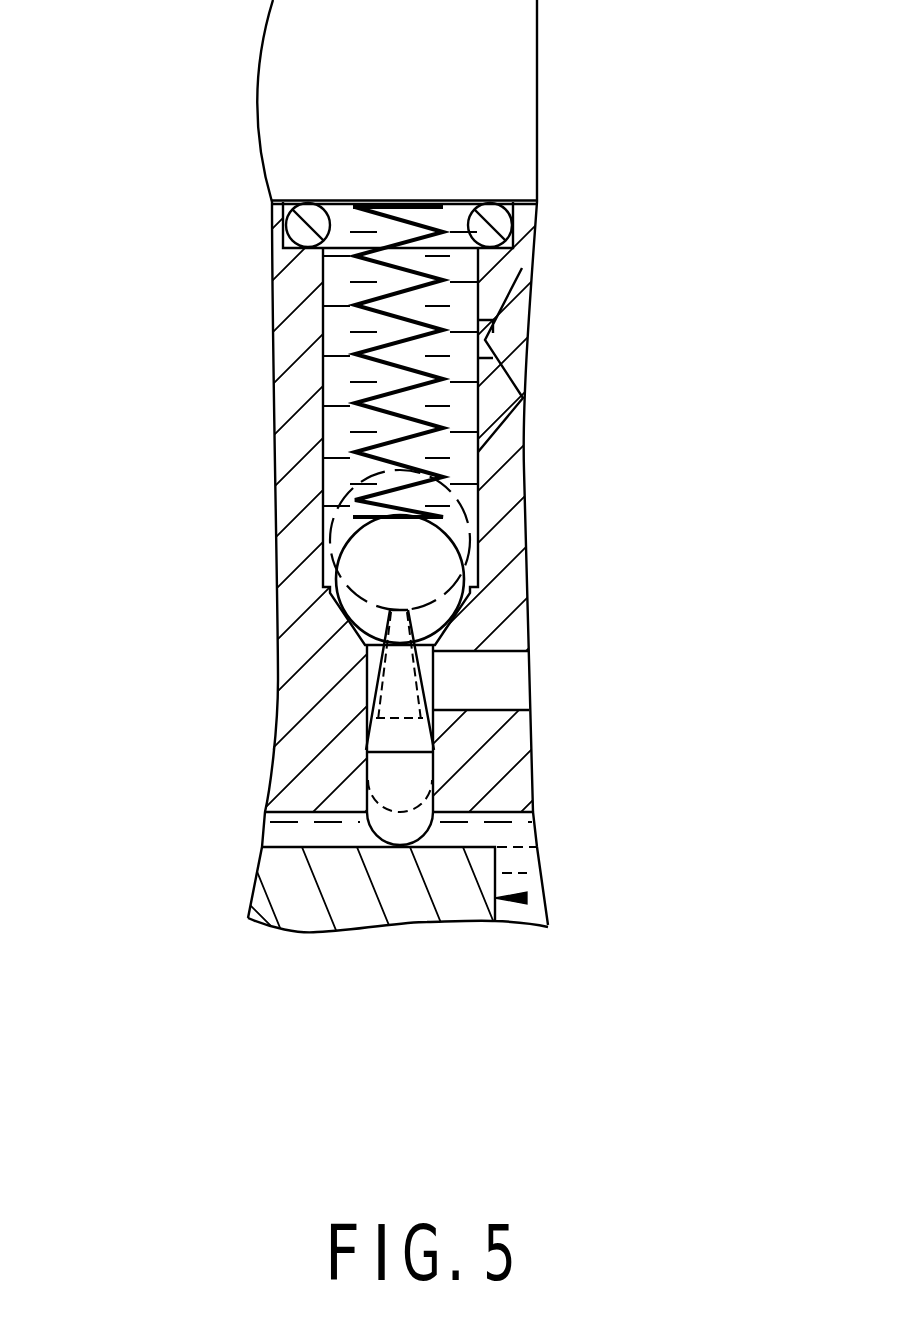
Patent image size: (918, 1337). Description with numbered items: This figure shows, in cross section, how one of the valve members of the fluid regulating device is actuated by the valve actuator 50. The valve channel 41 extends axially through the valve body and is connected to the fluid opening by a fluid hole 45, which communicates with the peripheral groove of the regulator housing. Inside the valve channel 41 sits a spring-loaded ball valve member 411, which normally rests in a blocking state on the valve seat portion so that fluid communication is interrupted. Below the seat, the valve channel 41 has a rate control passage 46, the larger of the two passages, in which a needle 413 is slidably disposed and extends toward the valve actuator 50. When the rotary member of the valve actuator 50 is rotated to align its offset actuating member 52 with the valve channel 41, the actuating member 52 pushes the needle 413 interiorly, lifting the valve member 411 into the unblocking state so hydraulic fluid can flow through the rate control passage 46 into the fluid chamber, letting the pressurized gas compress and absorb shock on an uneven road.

The valve channel 41 is at (323, 362).
The fluid hole 45 is at (485, 333).
The valve member 411 is at (445, 487).
The needle 413 is at (422, 664).
The rate control passage 46 is at (357, 688).
The actuating member 52 is at (443, 842).
The valve actuator 50 is at (520, 898).